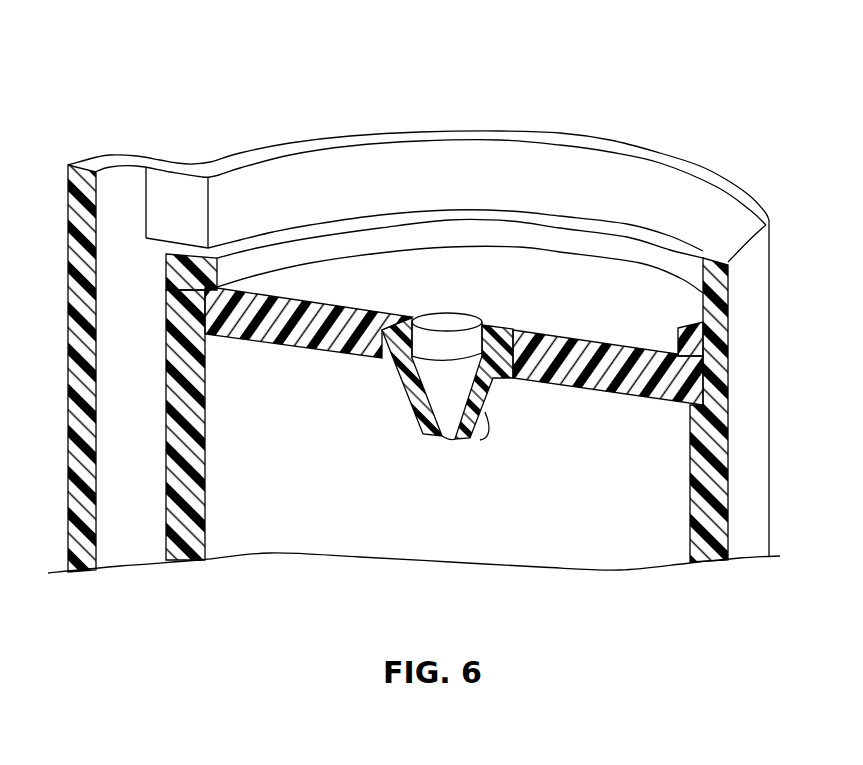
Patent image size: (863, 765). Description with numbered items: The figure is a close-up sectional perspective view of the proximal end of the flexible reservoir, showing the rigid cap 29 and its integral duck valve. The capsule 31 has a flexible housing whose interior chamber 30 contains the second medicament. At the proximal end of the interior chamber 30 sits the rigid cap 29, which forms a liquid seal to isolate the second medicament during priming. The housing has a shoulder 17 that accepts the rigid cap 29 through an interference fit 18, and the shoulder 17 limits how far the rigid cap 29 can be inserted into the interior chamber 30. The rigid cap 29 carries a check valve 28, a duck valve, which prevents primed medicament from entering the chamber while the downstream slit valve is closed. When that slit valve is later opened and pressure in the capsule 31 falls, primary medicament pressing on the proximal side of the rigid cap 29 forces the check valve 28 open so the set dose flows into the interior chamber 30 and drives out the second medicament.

The shoulder 17 is at (180, 352).
The interference fit 18 is at (178, 256).
The check valve 28 is at (449, 462).
The rigid cap 29 is at (538, 280).
The interior chamber 30 is at (585, 494).
The capsule 31 is at (768, 473).